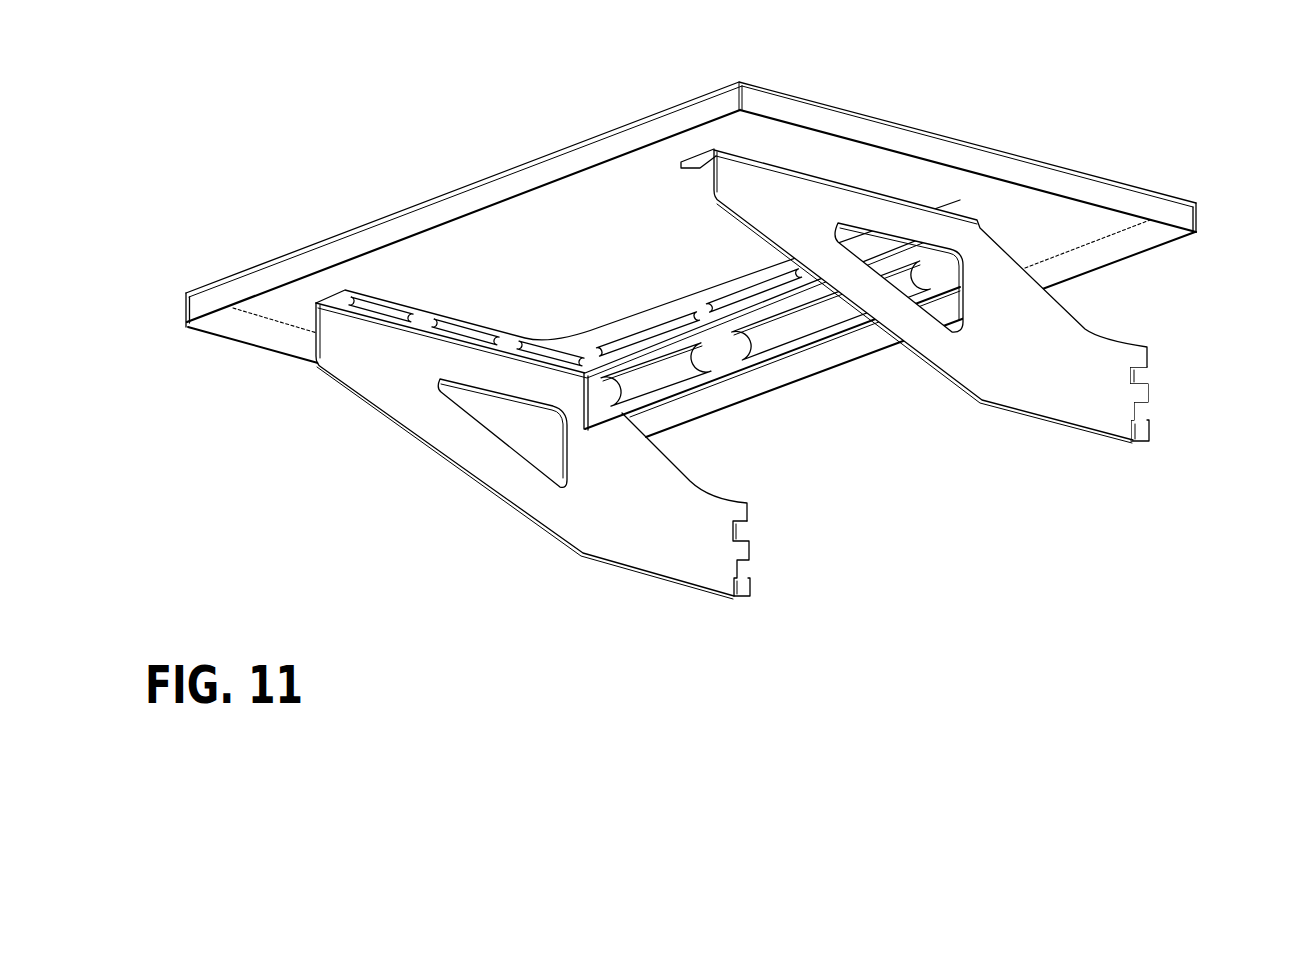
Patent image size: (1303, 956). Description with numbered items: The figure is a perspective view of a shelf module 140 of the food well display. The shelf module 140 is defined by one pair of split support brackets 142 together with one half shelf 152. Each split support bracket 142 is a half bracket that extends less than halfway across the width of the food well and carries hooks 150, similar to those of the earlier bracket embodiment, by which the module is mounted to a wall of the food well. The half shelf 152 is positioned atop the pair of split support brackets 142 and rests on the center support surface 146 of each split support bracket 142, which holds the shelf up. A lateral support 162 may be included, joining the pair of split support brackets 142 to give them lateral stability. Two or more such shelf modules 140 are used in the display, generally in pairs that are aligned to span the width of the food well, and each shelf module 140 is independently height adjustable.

The shelf module 140 is at (448, 167).
The half shelf 152 is at (592, 139).
The center support surface 146 is at (803, 173).
The split support bracket 142 is at (643, 540).
The hooks 150 is at (747, 577).
The lateral support 162 is at (773, 357).